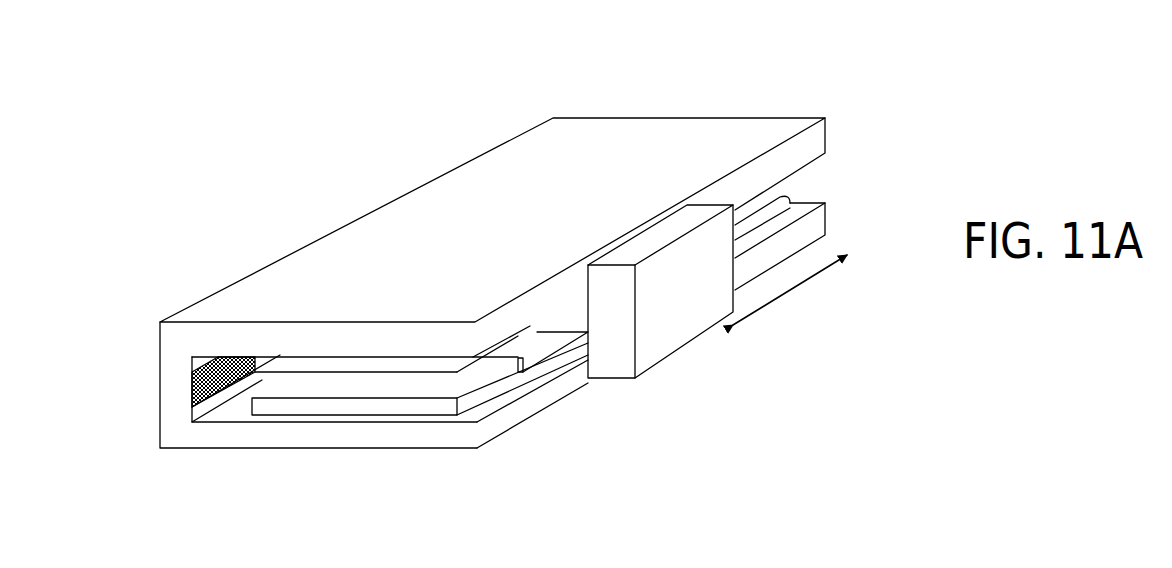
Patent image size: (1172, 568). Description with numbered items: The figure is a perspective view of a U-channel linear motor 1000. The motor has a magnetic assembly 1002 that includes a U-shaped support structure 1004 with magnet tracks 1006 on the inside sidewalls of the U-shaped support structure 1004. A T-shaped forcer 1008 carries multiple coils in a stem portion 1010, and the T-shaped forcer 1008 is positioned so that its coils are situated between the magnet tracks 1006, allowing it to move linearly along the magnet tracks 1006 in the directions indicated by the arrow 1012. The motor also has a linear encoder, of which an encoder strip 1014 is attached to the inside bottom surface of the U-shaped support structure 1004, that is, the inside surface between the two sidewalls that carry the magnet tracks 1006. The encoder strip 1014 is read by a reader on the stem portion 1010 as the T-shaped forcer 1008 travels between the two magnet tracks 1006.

The U-channel linear motor 1000 is at (918, 90).
The magnetic assembly 1002 is at (650, 128).
The U-shaped support structure 1004 is at (408, 262).
The magnet tracks 1006 is at (335, 372).
The T-shaped forcer 1008 is at (703, 292).
The stem portion 1010 is at (562, 327).
The arrow 1012 is at (795, 287).
The encoder strip 1014 is at (225, 397).